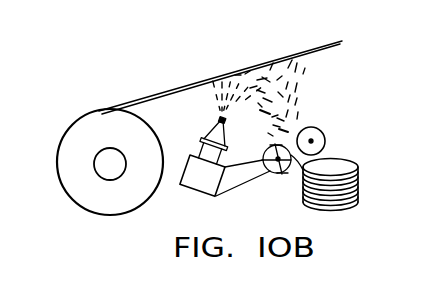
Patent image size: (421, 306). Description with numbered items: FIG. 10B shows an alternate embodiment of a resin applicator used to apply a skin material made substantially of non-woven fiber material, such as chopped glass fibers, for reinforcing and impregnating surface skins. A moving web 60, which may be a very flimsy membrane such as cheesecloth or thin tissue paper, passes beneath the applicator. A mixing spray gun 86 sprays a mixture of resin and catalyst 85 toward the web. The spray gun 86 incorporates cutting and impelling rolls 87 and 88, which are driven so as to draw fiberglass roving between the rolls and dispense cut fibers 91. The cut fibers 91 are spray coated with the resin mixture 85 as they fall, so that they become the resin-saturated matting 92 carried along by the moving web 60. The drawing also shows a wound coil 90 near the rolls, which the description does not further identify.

The web 60 is at (148, 94).
The mixture of resin and catalyst 85 is at (213, 98).
The mixing spray gun 86 is at (200, 133).
The cutting and impelling roll 87 is at (285, 176).
The cutting and impelling roll 88 is at (322, 130).
The wound coil 90 is at (341, 157).
The cut fibers 91 is at (305, 76).
The resin-saturated matting 92 is at (322, 51).